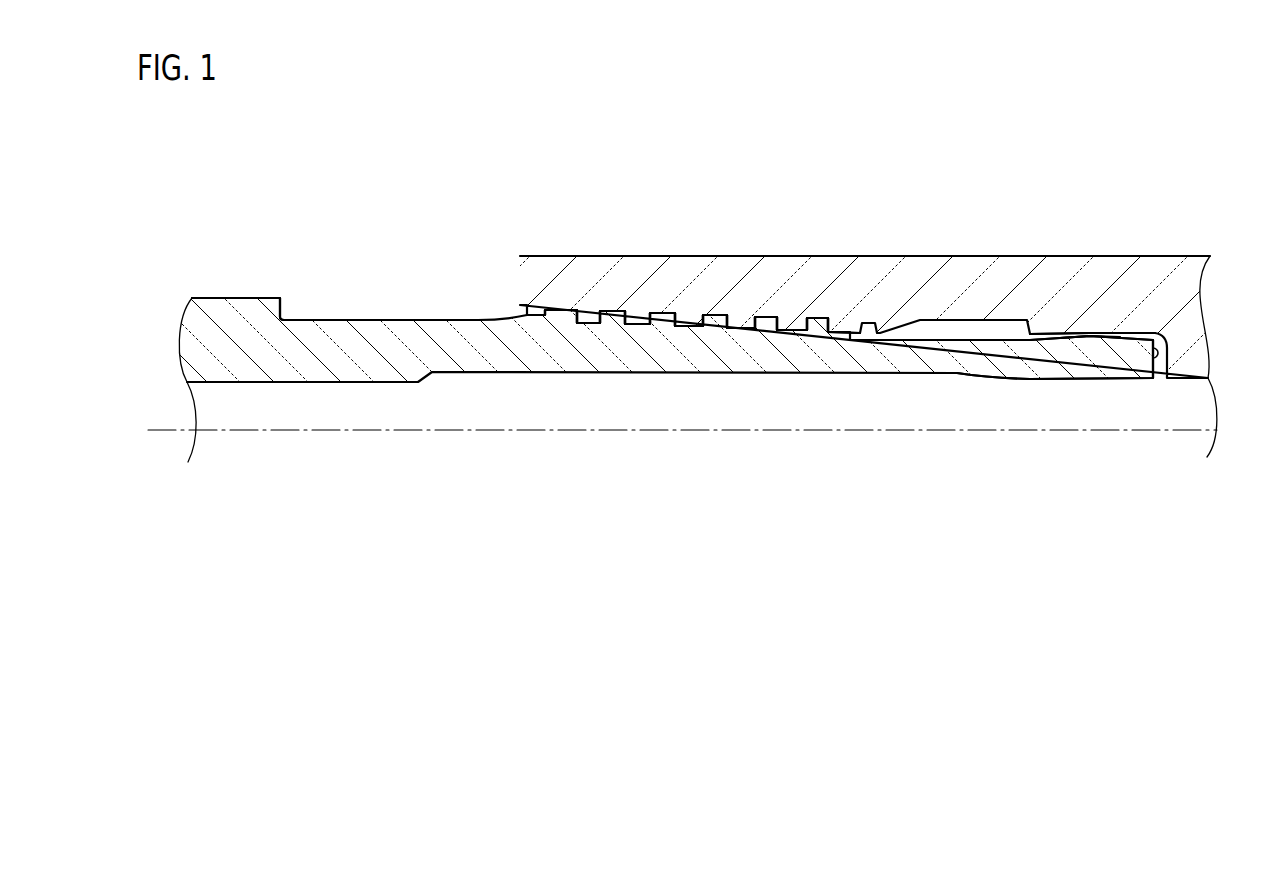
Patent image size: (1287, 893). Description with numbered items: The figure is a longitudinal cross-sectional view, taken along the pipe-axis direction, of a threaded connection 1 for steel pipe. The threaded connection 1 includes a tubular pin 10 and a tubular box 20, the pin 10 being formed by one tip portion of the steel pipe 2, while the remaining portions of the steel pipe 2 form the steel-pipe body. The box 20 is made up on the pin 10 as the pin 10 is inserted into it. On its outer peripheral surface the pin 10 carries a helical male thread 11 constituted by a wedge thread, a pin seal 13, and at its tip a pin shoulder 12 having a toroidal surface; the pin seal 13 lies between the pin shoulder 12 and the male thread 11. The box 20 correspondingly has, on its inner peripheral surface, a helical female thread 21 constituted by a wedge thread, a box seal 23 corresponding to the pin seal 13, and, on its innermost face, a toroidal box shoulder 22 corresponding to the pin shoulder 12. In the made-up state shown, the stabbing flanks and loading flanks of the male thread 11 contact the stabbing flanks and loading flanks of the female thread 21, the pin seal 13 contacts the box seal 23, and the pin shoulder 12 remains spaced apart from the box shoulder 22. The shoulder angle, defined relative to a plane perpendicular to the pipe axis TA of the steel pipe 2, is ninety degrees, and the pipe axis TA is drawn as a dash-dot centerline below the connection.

The threaded connection 1 is at (688, 563).
The steel pipe 2 is at (247, 363).
The pin 10 is at (240, 288).
The male thread 11 is at (665, 322).
The pin shoulder 12 is at (1143, 376).
The pin seal 13 is at (1100, 330).
The box 20 is at (1070, 252).
The female thread 21 is at (692, 322).
The box shoulder 22 is at (1158, 352).
The box seal 23 is at (1096, 336).
The pipe axis TA is at (681, 415).